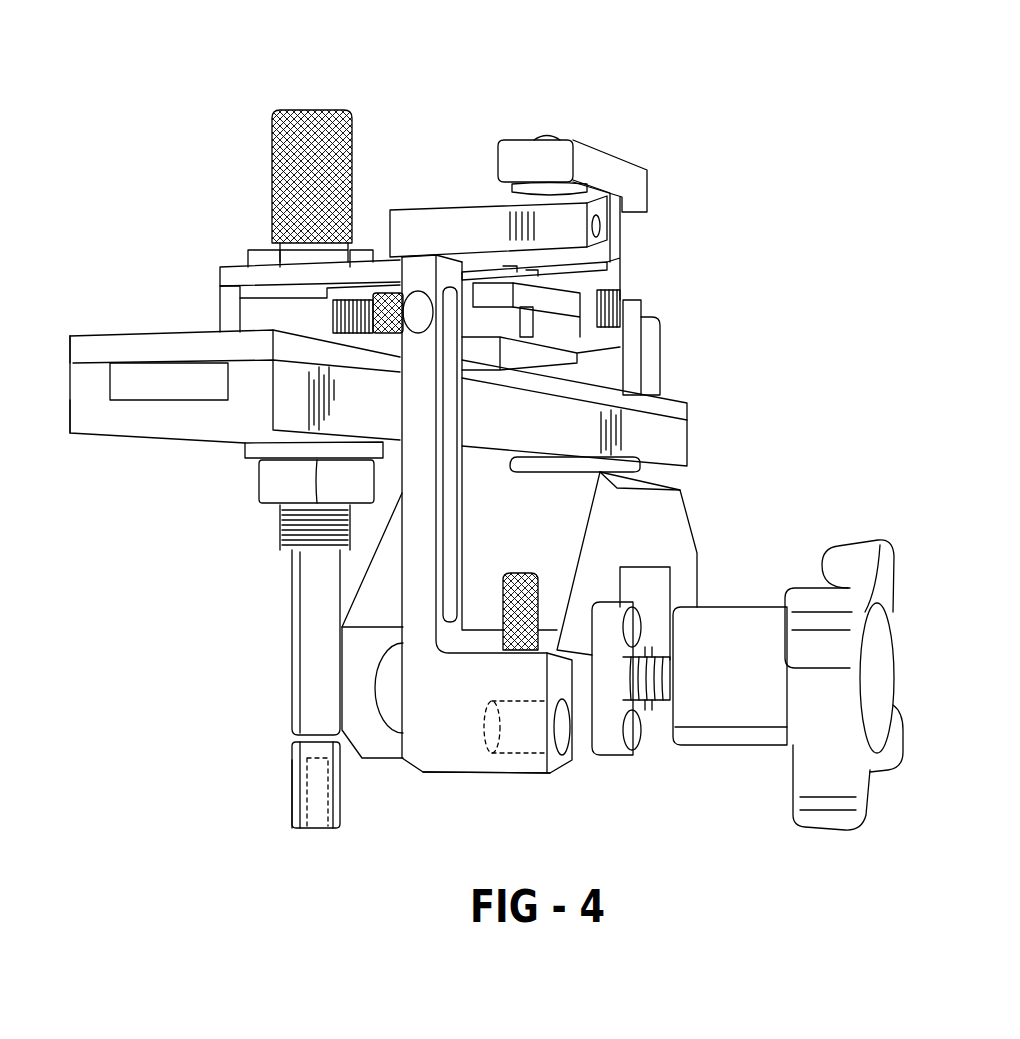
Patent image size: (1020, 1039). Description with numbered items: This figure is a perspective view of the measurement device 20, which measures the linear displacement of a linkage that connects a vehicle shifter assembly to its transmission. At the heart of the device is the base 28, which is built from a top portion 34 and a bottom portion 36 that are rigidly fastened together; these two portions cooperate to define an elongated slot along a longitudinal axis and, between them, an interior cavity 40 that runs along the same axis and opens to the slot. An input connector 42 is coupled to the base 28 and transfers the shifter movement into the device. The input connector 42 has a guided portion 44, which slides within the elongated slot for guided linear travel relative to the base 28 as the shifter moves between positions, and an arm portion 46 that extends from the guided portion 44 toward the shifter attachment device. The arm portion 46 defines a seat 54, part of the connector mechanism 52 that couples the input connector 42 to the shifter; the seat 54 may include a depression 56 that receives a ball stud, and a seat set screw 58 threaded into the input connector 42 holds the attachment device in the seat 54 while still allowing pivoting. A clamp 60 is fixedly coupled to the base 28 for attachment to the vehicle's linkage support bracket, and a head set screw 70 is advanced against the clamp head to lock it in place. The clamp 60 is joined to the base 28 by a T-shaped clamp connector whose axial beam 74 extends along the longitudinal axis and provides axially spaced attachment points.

The measurement device 20 is at (625, 88).
The base 28 is at (100, 425).
The top portion 34 is at (83, 350).
The bottom portion 36 is at (75, 412).
The interior cavity 40 is at (152, 390).
The input connector 42 is at (228, 262).
The guided portion 44 is at (232, 315).
The arm portion 46 is at (423, 500).
The connector mechanism 52 is at (528, 786).
The seat 54 is at (460, 757).
The depression 56 is at (565, 745).
The seat set screw 58 is at (398, 290).
The clamp 60 is at (670, 530).
The head set screw 70 is at (735, 630).
The axial beam 74 is at (517, 152).